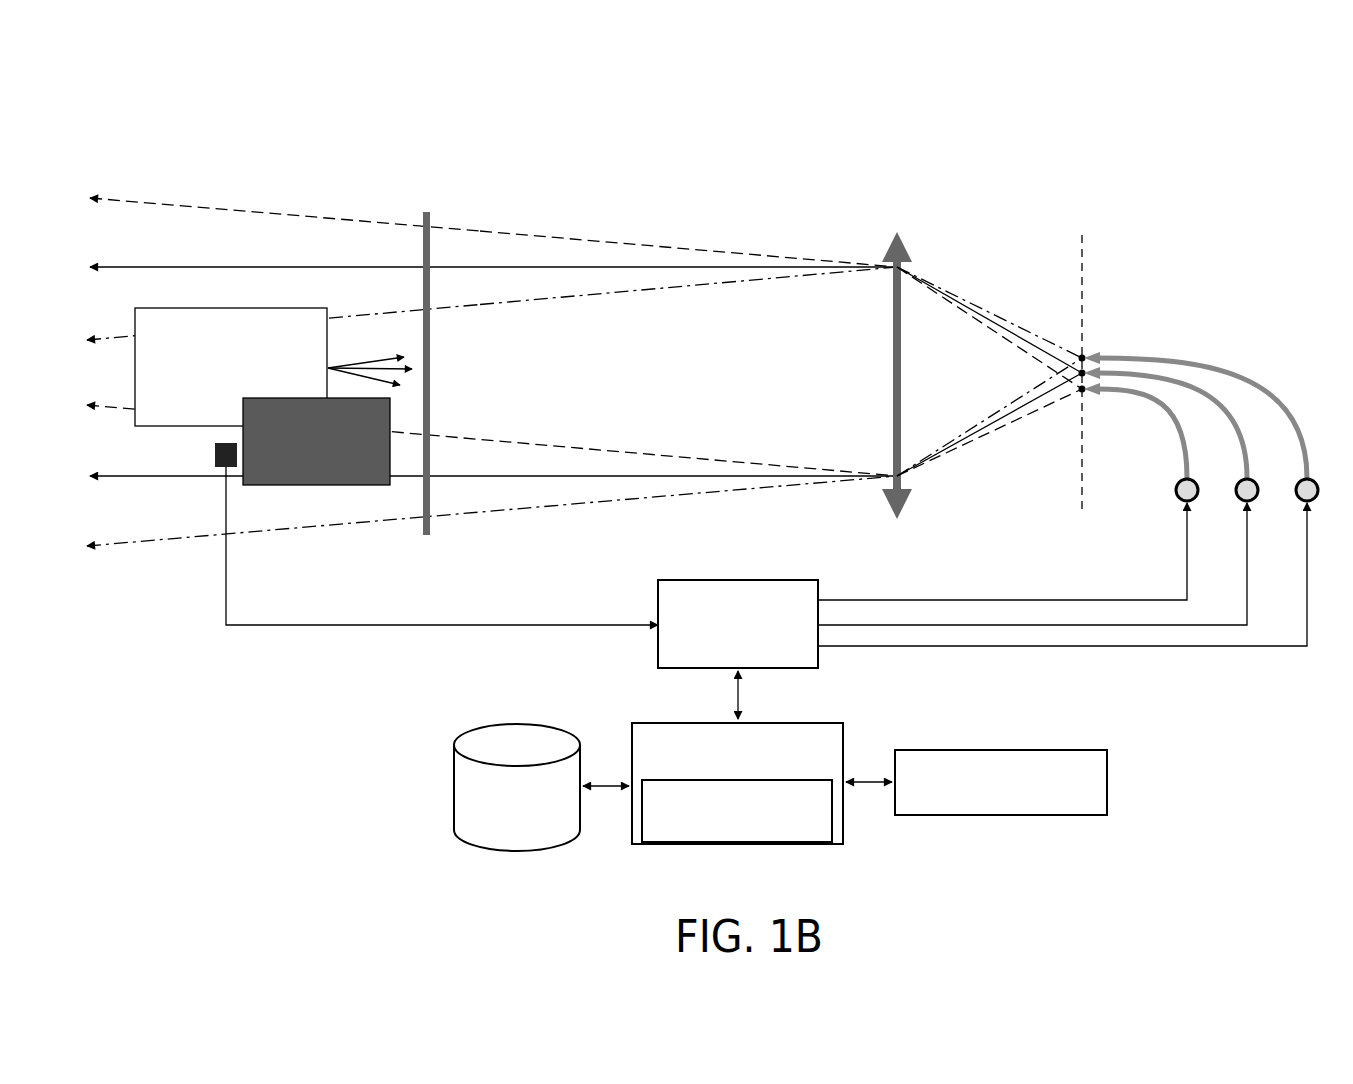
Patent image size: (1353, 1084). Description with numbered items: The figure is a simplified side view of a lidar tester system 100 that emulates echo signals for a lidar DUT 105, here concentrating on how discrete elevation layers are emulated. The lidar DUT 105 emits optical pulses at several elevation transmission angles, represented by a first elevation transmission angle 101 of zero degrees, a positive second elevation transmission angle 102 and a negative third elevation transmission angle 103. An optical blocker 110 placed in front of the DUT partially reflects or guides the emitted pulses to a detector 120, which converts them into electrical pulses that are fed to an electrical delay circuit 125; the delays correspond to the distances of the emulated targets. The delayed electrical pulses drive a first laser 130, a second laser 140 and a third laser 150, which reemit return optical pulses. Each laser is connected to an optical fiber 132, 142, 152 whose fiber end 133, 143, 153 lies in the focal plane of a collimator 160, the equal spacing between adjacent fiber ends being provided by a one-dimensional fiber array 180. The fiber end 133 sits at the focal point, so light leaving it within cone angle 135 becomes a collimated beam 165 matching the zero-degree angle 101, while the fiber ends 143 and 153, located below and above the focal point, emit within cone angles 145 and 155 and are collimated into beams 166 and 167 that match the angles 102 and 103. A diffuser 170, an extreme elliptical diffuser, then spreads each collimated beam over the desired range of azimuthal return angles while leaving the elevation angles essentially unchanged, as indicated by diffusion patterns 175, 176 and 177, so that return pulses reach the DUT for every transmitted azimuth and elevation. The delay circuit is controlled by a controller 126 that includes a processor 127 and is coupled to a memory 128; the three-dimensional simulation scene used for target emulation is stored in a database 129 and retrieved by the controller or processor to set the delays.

The lidar tester system 100 is at (752, 65).
The first elevation transmission angle 101 is at (418, 351).
The second elevation transmission angle 102 is at (405, 326).
The third elevation transmission angle 103 is at (408, 405).
The lidar DUT 105 is at (231, 331).
The optical blocker 110 is at (316, 484).
The detector 120 is at (400, 534).
The electrical delay circuit 125 is at (742, 614).
The controller 126 is at (737, 750).
The processor 127 is at (780, 854).
The memory 128 is at (1001, 747).
The database 129 is at (498, 811).
The first laser 130 is at (1038, 552).
The optical fiber 132 is at (1195, 406).
The fiber end 133 is at (991, 417).
The cone angle 135 is at (989, 309).
The second laser 140 is at (1008, 539).
The optical fiber 142 is at (1160, 430).
The fiber end 143 is at (1108, 430).
The cone angle 145 is at (989, 345).
The third laser 150 is at (1068, 562).
The optical fiber 152 is at (1195, 419).
The fiber end 153 is at (1105, 334).
The cone angle 155 is at (989, 289).
The collimator 160 is at (900, 389).
The collimated beam 165 is at (688, 232).
The collimated beam 166 is at (688, 221).
The collimated beam 167 is at (688, 323).
The diffuser 170 is at (493, 379).
The diffusion pattern 175 is at (285, 215).
The diffusion pattern 176 is at (285, 190).
The diffusion pattern 177 is at (283, 288).
The fiber array 180 is at (1107, 358).